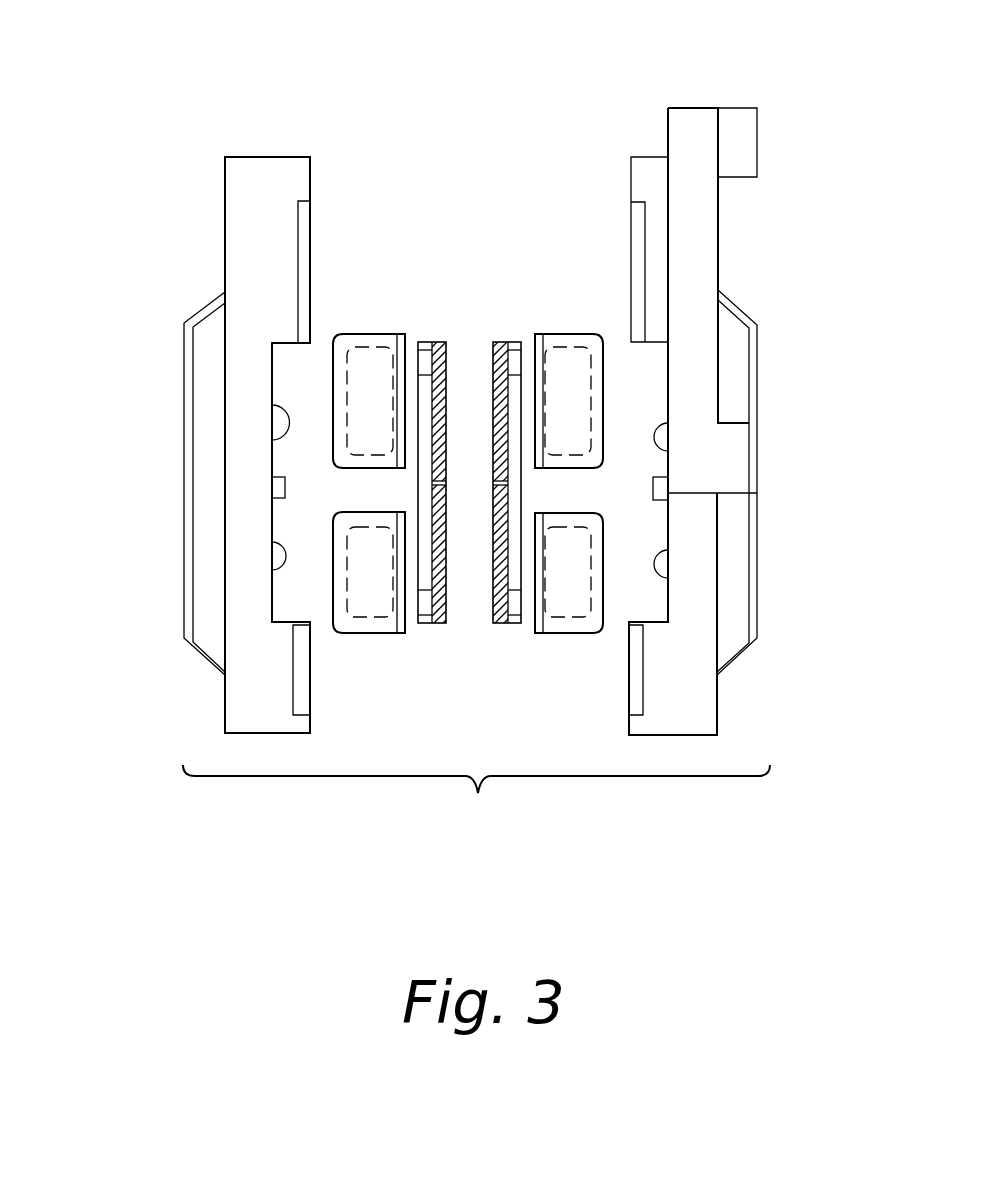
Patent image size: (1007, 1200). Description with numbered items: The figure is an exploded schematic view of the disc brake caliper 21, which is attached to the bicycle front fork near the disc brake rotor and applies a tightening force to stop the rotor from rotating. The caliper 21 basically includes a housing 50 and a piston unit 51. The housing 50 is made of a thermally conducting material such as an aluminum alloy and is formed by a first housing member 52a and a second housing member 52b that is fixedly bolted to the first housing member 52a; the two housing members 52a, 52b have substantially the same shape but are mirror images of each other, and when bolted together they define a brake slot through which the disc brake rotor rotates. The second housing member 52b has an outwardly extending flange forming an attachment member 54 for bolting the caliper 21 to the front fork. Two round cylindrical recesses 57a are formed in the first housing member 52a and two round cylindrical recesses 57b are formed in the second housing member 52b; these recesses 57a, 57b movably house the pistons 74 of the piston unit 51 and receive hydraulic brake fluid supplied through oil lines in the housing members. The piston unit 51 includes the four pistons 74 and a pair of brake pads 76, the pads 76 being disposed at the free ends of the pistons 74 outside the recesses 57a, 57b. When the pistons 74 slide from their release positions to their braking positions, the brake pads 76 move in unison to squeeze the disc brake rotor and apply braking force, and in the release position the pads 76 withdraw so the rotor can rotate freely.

The disc brake caliper 21 is at (765, 212).
The housing 50 is at (196, 379).
The piston unit 51 is at (469, 456).
The first housing member 52a is at (184, 362).
The second housing member 52b is at (757, 364).
The attachment member 54 is at (757, 370).
The cylindrical recesses 57a is at (275, 440).
The cylindrical recesses 57b is at (652, 437).
The pistons 74 is at (362, 334).
The brake pads 76 is at (497, 625).